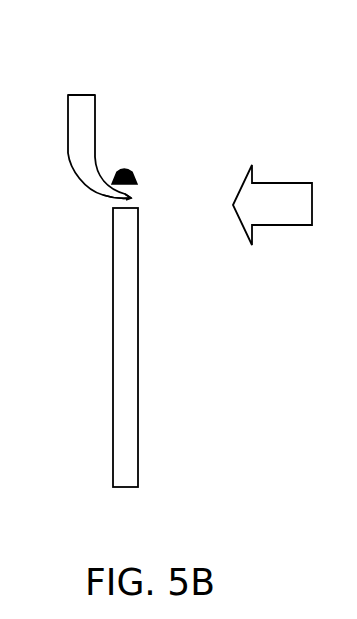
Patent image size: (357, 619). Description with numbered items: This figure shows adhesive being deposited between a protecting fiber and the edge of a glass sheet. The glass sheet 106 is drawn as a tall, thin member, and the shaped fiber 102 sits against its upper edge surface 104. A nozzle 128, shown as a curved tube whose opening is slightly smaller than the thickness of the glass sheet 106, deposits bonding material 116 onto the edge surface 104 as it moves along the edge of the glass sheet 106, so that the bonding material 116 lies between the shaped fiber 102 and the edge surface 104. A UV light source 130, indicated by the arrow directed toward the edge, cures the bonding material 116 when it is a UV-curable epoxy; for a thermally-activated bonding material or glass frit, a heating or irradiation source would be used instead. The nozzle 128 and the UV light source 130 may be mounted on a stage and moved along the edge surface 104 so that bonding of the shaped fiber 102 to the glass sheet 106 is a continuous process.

The nozzle 128 is at (82, 103).
The shaped fiber 102 is at (126, 172).
The edge surface of glass sheet 104 is at (128, 207).
The bonding material 116 is at (125, 195).
The glass sheet 106 is at (127, 357).
The UV light source 130 is at (272, 205).